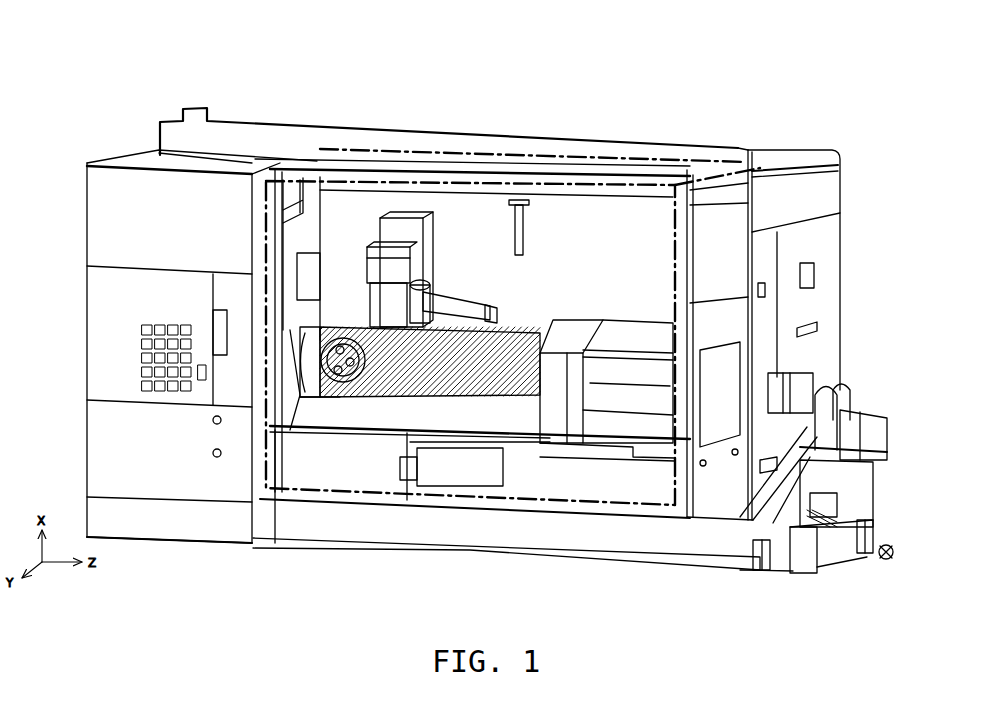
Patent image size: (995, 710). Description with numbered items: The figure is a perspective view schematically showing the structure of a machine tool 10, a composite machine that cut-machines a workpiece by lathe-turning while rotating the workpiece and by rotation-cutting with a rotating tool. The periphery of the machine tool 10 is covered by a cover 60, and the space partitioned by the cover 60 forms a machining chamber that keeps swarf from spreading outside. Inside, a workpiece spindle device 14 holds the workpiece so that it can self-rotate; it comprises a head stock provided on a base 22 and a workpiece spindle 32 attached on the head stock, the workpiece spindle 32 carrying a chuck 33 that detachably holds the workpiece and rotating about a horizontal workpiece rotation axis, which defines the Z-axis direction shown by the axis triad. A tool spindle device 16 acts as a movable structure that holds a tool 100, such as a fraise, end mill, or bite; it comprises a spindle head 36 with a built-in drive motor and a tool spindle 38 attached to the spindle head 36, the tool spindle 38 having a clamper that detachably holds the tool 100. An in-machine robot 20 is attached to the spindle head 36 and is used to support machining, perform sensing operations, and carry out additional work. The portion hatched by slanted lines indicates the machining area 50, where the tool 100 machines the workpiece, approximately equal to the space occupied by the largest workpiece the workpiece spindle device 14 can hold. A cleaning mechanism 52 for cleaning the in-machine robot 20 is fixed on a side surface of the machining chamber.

The machine tool 10 is at (672, 105).
The workpiece spindle device 14 is at (292, 392).
The tool spindle device 16 is at (395, 228).
The in-machine robot 20 is at (457, 287).
The base 22 is at (645, 553).
The workpiece spindle 32 is at (313, 397).
The chuck 33 is at (285, 303).
The spindle head 36 is at (378, 262).
The tool spindle 38 is at (376, 292).
The machining area 50 is at (500, 333).
The cleaning mechanism 52 is at (498, 152).
The cover 60 is at (693, 270).
The tool 100 is at (362, 395).